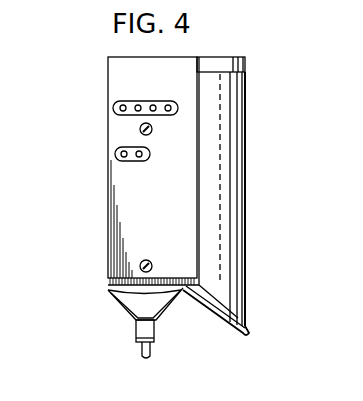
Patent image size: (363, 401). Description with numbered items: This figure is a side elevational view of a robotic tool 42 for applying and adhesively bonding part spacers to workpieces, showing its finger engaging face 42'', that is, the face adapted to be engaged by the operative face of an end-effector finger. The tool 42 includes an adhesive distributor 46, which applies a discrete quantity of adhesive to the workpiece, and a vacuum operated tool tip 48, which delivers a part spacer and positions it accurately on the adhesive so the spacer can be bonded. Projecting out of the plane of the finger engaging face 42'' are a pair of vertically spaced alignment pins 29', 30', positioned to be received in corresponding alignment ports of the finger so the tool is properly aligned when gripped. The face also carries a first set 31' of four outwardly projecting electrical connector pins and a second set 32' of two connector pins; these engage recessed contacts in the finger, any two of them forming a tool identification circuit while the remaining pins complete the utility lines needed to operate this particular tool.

The robotic tool 42 is at (117, 188).
The finger engaging face 42'' is at (92, 219).
The first set of electrical connector pins 31' is at (117, 101).
The alignment pin 29' is at (103, 133).
The second set of electrical connector pins 32' is at (102, 161).
The alignment pin 30' is at (102, 270).
The adhesive distributor 46 is at (238, 296).
The vacuum operated tool tip 48 is at (152, 355).